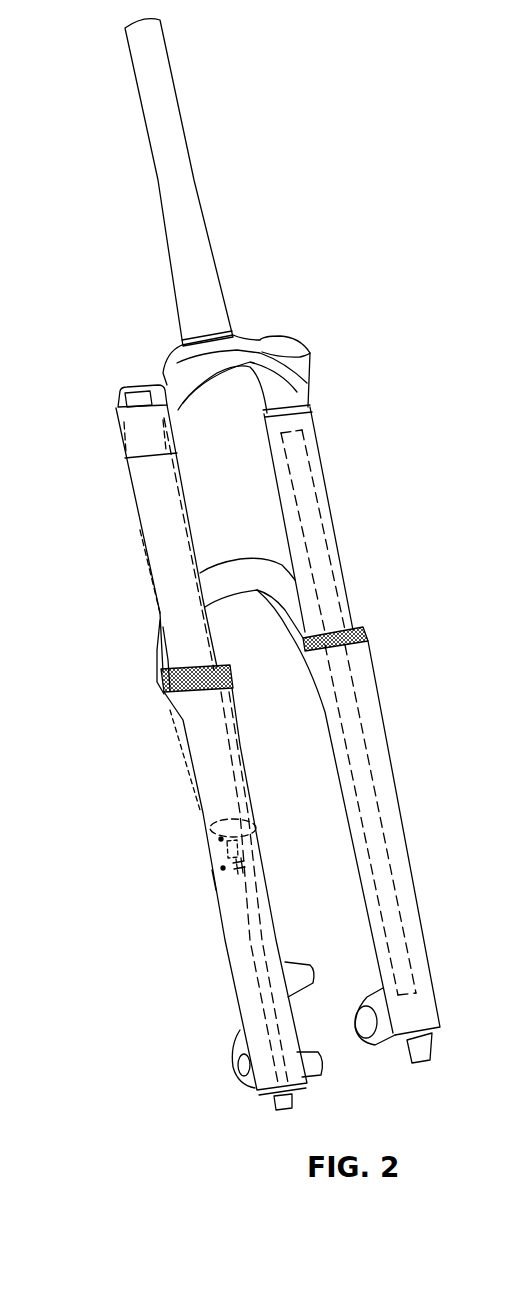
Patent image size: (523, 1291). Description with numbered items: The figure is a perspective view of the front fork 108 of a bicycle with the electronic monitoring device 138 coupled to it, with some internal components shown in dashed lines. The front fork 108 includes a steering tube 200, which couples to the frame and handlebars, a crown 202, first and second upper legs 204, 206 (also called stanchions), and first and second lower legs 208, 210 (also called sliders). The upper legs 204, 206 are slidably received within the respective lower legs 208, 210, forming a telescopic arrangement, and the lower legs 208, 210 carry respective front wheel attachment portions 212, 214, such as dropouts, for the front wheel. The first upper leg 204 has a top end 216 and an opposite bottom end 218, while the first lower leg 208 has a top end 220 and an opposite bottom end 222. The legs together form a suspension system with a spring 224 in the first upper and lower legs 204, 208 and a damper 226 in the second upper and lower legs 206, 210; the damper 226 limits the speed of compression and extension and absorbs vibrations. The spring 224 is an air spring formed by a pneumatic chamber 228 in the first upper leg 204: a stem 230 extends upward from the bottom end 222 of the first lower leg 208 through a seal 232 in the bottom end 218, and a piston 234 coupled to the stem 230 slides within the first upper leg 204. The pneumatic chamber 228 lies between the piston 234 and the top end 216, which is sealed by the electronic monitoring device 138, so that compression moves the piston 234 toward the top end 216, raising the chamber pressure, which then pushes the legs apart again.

The front fork 108 is at (100, 233).
The steering tube 200 is at (157, 115).
The crown 202 is at (240, 352).
The electronic monitoring device 138 is at (118, 384).
The top end 216 is at (120, 399).
The first upper leg 204 is at (140, 510).
The second upper leg 206 is at (330, 500).
The pneumatic chamber 228 is at (157, 595).
The top end 220 is at (173, 680).
The spring 224 is at (182, 770).
The first lower leg 208 is at (225, 940).
The second lower leg 210 is at (393, 800).
The damper 226 is at (370, 713).
The stem 230 is at (262, 992).
The piston 234 is at (220, 838).
The seal 232 is at (222, 868).
The bottom end 218 is at (212, 880).
The front wheel attachment portion 212 is at (235, 1065).
The front wheel attachment portion 214 is at (363, 1030).
The bottom end 222 is at (272, 1100).